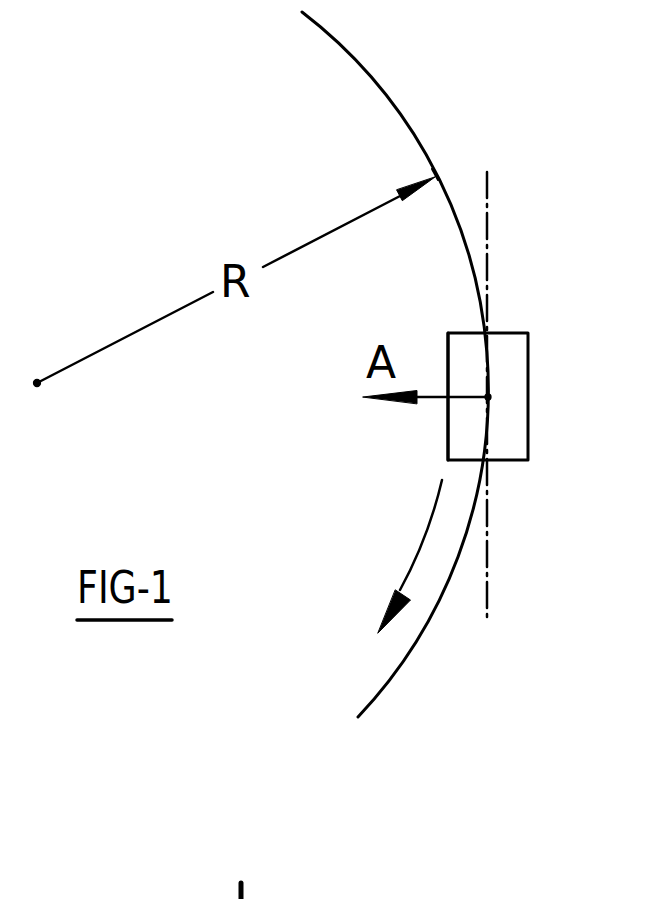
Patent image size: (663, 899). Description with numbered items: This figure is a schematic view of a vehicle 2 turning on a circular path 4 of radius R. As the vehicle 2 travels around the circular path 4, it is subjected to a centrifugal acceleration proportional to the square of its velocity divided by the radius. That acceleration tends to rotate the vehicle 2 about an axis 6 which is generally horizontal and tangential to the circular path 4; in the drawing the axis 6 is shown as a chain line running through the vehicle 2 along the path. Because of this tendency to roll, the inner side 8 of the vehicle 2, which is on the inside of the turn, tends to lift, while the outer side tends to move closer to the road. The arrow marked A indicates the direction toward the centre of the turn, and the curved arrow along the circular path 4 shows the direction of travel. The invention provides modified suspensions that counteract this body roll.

The vehicle 2 is at (528, 363).
The circular path 4 is at (418, 645).
The axis 6 is at (493, 528).
The inner side 8 is at (448, 443).